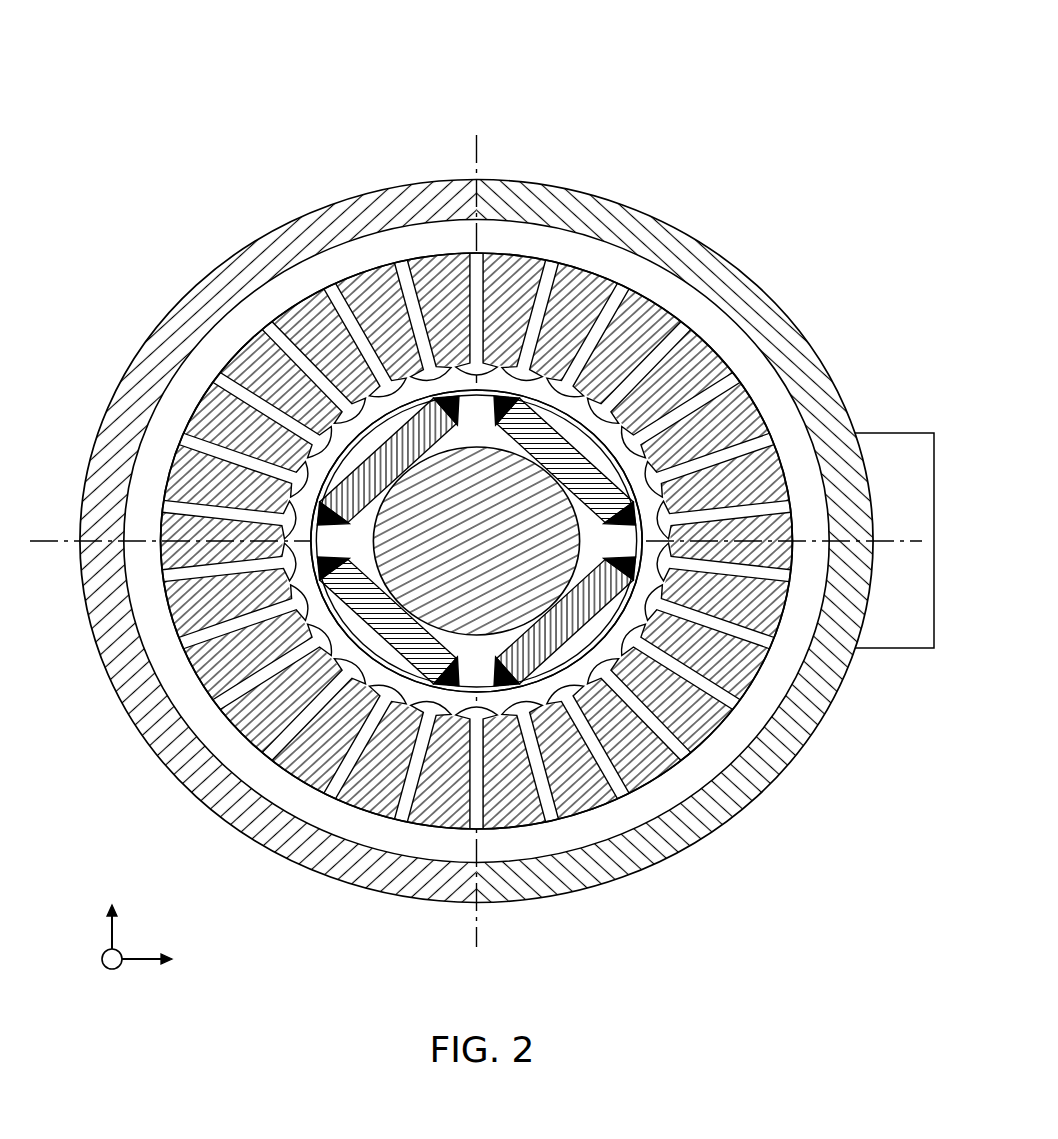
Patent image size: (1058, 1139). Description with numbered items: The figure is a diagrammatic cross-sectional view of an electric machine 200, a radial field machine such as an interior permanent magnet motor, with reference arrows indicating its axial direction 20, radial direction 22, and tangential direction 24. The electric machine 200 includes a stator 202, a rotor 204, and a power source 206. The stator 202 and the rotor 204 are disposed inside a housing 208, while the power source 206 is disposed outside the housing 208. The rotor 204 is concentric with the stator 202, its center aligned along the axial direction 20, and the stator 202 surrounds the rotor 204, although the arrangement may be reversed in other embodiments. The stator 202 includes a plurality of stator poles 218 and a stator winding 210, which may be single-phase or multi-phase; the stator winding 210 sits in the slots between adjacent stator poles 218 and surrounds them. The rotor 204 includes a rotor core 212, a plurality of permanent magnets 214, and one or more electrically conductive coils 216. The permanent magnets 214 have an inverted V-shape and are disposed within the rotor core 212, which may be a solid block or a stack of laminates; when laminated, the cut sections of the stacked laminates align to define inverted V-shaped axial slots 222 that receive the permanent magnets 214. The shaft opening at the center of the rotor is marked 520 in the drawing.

The electric machine 200 is at (740, 78).
The stator 202 is at (359, 246).
The rotor 204 is at (623, 628).
The power source 206 is at (917, 446).
The housing 208 is at (700, 847).
The stator winding 210 is at (548, 254).
The rotor core 212 is at (235, 720).
The permanent magnets 214 is at (598, 420).
The electrically conductive coils 216 is at (455, 692).
The stator poles 218 is at (262, 333).
The axial slots 222 is at (595, 477).
The shaft 520 is at (495, 514).
The axial direction 20 is at (110, 970).
The radial direction 22 is at (135, 962).
The tangential direction 24 is at (118, 920).